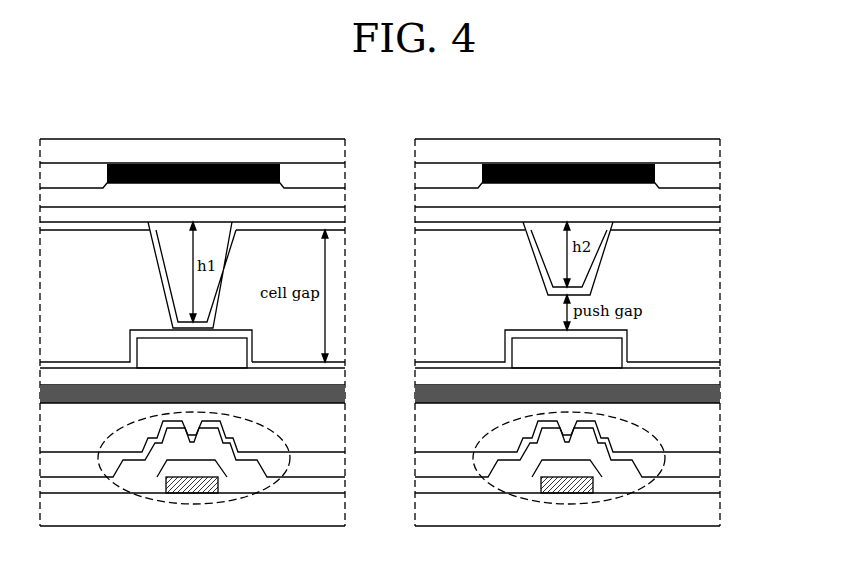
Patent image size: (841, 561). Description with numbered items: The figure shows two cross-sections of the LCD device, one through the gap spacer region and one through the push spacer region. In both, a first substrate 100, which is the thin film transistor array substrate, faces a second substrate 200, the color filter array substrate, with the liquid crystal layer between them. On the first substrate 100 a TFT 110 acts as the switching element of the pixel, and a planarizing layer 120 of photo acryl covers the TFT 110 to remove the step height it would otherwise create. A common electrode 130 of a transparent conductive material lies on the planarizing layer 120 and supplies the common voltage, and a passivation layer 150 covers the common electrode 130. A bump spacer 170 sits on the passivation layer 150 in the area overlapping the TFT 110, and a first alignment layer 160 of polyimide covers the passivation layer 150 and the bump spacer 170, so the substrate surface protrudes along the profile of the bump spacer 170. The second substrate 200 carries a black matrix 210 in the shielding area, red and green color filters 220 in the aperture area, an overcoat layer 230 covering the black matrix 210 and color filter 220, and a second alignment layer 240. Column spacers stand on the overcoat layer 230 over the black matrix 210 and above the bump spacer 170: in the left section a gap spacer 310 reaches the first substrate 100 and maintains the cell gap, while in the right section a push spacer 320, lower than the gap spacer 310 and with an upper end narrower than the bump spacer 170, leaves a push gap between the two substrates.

The first substrate 100 is at (710, 513).
The TFT 110 is at (236, 496).
The planarizing layer 120 is at (710, 435).
The common electrode 130 is at (710, 400).
The passivation layer 150 is at (710, 379).
The first alignment layer 160 is at (290, 362).
The bump spacer 170 is at (146, 352).
The second substrate 200 is at (335, 153).
The black matrix 210 is at (213, 163).
The color filter 220 is at (335, 180).
The overcoat layer 230 is at (335, 208).
The second alignment layer 240 is at (335, 231).
The gap spacer 310 is at (173, 240).
The push spacer 320 is at (548, 240).